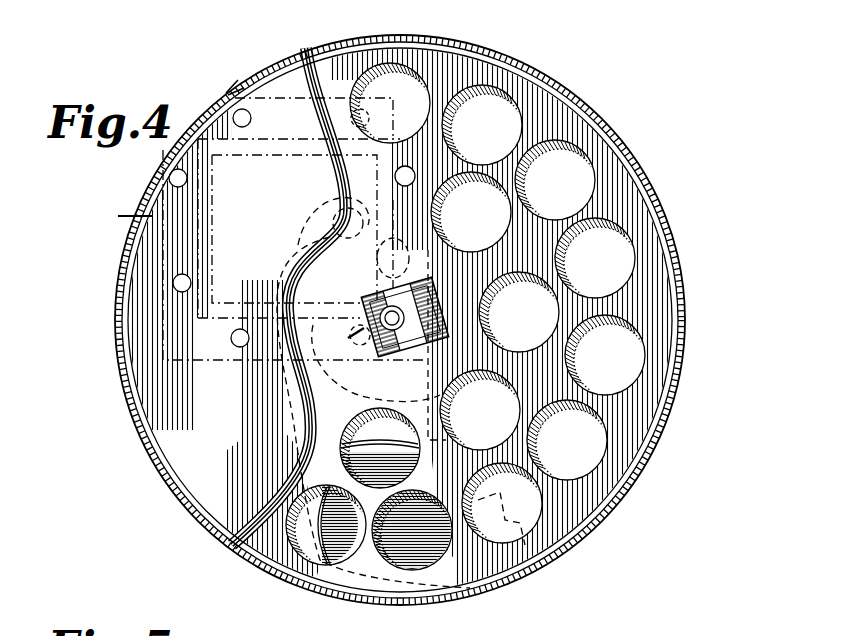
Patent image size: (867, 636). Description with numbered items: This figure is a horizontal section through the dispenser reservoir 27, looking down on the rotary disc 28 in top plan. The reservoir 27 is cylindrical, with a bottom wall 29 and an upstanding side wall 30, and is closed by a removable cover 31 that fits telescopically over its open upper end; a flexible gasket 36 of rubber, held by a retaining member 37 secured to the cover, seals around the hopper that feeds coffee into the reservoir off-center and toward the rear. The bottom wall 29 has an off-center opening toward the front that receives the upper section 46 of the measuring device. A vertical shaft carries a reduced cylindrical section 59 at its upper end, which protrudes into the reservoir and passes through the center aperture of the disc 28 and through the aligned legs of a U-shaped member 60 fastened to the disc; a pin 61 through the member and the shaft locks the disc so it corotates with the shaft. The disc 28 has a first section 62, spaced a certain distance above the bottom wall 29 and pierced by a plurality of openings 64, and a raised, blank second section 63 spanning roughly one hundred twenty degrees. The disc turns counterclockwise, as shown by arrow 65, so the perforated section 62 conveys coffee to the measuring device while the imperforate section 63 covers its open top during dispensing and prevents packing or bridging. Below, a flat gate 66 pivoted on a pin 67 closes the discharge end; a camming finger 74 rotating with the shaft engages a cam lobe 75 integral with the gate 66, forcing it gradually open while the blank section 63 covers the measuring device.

The reservoir 27 is at (478, 54).
The rotary disc 28 is at (549, 102).
The bottom wall 29 is at (628, 357).
The side wall 30 is at (678, 326).
The removable cover 31 is at (226, 92).
The flexible gasket 36 is at (283, 170).
The retaining member 37 is at (259, 255).
The upper section 46 is at (296, 580).
The reduced cylindrical section 59 is at (408, 354).
The U-shaped member 60 is at (438, 303).
The pin 61 is at (388, 362).
The first section 62 is at (632, 197).
The second section 63 is at (153, 418).
The openings 64 is at (481, 170).
The arrow 65 is at (573, 510).
The gate 66 is at (530, 478).
The pin 67 is at (350, 208).
The camming finger 74 is at (471, 212).
The cam lobe 75 is at (356, 340).